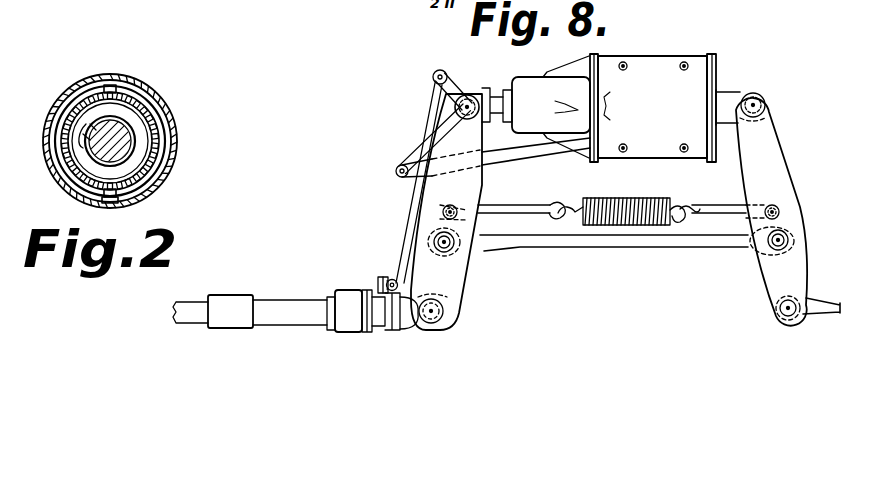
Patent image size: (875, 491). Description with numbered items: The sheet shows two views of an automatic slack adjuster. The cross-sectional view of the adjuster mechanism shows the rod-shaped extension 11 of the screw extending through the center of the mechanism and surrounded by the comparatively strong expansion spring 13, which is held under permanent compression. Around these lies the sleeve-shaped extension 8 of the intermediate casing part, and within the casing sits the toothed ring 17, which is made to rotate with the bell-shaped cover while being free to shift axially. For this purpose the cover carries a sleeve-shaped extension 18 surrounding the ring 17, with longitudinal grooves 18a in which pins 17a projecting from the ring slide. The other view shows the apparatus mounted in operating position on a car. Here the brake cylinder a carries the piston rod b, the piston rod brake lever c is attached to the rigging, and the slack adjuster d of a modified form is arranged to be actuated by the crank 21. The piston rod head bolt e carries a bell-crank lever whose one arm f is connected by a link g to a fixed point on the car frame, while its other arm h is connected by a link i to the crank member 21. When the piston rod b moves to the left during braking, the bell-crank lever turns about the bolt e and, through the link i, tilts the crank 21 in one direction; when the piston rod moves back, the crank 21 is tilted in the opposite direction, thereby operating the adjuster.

In FIG. 2, the rod-shaped extension 11 is at (63, 100).
In FIG. 2, the sleeve-shaped extension 8 is at (177, 138).
In FIG. 2, the longitudinal grooves 18a is at (140, 88).
In FIG. 2, the toothed ring 17 is at (158, 159).
In FIG. 2, the sleeve-shaped extension 18 is at (160, 112).
In FIG. 2, the pins 17a is at (113, 86).
In FIG. 2, the expansion spring 13 is at (56, 158).
In FIG. 8, the brake cylinder a is at (663, 62).
In FIG. 8, the piston rod b is at (495, 93).
In FIG. 8, the piston rod brake lever c is at (450, 271).
In FIG. 8, the slack adjuster d is at (352, 325).
In FIG. 8, the piston rod head bolt e is at (464, 97).
In FIG. 8, the bell-crank lever arm f is at (407, 155).
In FIG. 8, the link g is at (512, 150).
In FIG. 8, the bell-crank lever arm h is at (433, 93).
In FIG. 8, the link i is at (404, 229).
In FIG. 8, the crank 21 is at (373, 285).